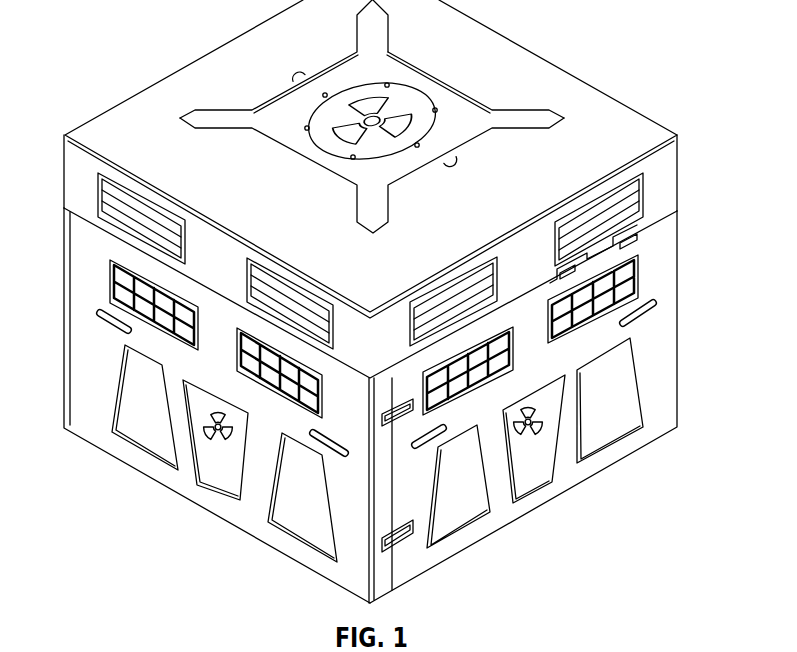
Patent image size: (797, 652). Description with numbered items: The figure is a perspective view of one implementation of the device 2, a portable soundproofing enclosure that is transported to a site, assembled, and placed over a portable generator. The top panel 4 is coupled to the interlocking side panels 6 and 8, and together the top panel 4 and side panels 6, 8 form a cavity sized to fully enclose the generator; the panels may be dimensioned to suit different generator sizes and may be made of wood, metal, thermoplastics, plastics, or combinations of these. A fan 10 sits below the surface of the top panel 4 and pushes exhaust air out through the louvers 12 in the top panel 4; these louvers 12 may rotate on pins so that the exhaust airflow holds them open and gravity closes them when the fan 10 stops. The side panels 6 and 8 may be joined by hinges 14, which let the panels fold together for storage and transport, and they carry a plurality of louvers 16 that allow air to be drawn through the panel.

The device 2 is at (90, 62).
The top panel 4 is at (557, 91).
The side panel 6 is at (662, 333).
The side panel 8 is at (82, 334).
The fan 10 is at (453, 113).
The louvers 12 is at (642, 197).
The hinges 14 is at (407, 549).
The louvers 16 is at (640, 287).